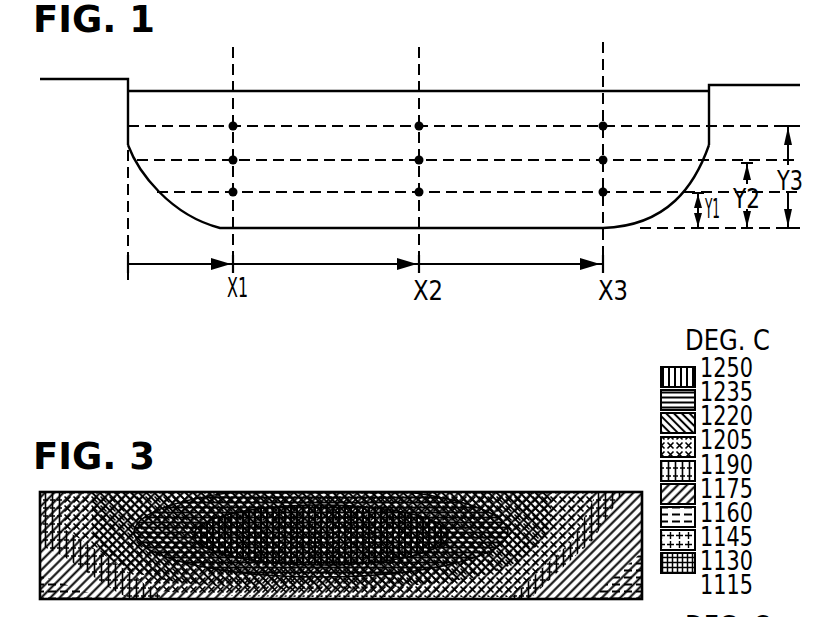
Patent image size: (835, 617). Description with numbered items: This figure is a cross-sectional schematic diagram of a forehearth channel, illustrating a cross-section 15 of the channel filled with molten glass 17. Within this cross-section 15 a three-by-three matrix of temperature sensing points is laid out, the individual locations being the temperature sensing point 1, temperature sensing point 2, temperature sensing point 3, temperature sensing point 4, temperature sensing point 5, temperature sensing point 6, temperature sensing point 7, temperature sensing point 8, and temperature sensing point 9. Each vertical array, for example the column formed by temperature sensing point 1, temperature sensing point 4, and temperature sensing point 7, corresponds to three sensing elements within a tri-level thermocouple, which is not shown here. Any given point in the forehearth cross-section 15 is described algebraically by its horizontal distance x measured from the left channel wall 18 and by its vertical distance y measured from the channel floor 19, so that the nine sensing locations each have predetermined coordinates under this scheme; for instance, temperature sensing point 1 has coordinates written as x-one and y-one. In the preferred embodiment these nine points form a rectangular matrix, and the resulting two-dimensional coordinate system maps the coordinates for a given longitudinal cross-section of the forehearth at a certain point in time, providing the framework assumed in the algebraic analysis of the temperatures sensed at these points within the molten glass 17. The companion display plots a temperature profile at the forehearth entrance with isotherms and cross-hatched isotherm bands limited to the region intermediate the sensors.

The temperature sensing point 1 is at (239, 205).
The temperature sensing point 2 is at (428, 205).
The temperature sensing point 3 is at (611, 205).
The temperature sensing point 4 is at (241, 173).
The temperature sensing point 5 is at (427, 173).
The temperature sensing point 6 is at (611, 173).
The temperature sensing point 7 is at (241, 140).
The temperature sensing point 8 is at (427, 140).
The temperature sensing point 9 is at (611, 140).
The cross-section 15 is at (139, 311).
The molten glass 17 is at (282, 91).
The left channel wall 18 is at (128, 218).
The channel floor 19 is at (557, 231).